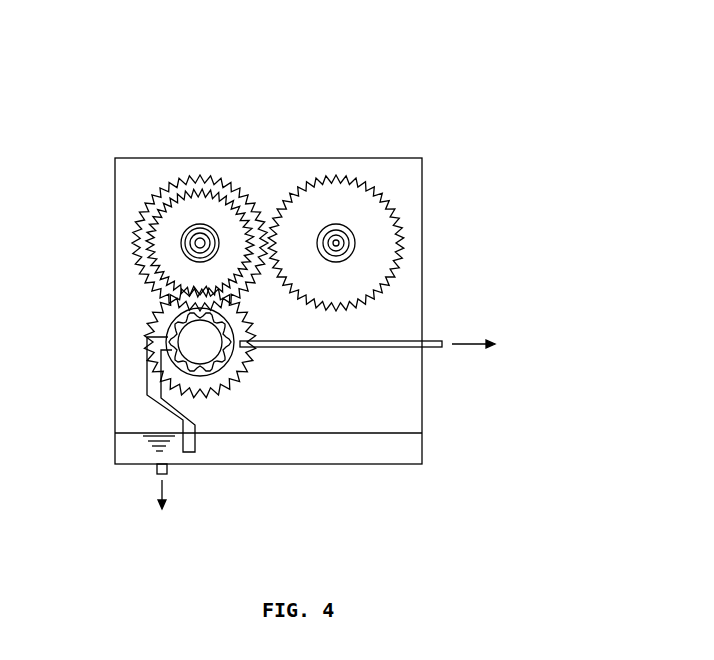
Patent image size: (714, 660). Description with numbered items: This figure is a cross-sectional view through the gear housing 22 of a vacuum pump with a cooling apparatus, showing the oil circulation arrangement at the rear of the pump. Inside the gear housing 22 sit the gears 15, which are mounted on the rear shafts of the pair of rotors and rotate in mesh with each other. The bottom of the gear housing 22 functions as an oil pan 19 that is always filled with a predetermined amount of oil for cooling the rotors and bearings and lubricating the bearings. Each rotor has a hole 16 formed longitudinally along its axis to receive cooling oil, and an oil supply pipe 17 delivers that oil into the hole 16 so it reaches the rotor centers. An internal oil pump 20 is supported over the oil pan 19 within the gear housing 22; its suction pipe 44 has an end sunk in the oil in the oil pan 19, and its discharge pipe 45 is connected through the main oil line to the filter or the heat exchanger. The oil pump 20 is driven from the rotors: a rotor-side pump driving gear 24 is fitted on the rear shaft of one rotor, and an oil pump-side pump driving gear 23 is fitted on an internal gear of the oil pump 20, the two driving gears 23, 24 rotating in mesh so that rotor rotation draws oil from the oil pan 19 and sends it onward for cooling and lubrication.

The gears 15 is at (269, 183).
The hole 16 is at (373, 243).
The oil supply pipe 17 is at (343, 260).
The oil pan 19 is at (387, 448).
The oil pump 20 is at (155, 326).
The gear housing 22 is at (378, 158).
The oil pump-side pump driving gear 23 is at (160, 309).
The rotor-side pump driving gear 24 is at (155, 231).
The suction pipe 44 is at (158, 393).
The discharge pipe 45 is at (398, 345).